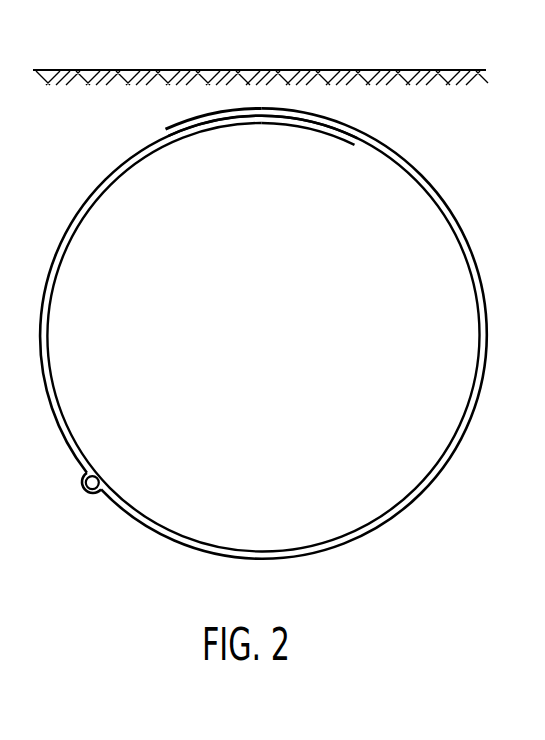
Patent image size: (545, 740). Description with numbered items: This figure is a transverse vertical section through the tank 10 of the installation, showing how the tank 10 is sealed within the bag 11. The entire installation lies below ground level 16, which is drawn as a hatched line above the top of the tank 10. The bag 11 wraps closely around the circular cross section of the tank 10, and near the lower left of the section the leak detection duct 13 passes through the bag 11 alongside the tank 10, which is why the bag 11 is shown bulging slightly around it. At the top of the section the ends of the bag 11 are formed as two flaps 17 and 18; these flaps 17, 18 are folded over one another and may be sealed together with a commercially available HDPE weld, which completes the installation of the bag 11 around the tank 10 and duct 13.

The tank 10 is at (298, 290).
The bag 11 is at (463, 224).
The leak detection duct 13 is at (83, 479).
The ground level 16 is at (303, 70).
The flap 17 is at (189, 128).
The flap 18 is at (346, 128).